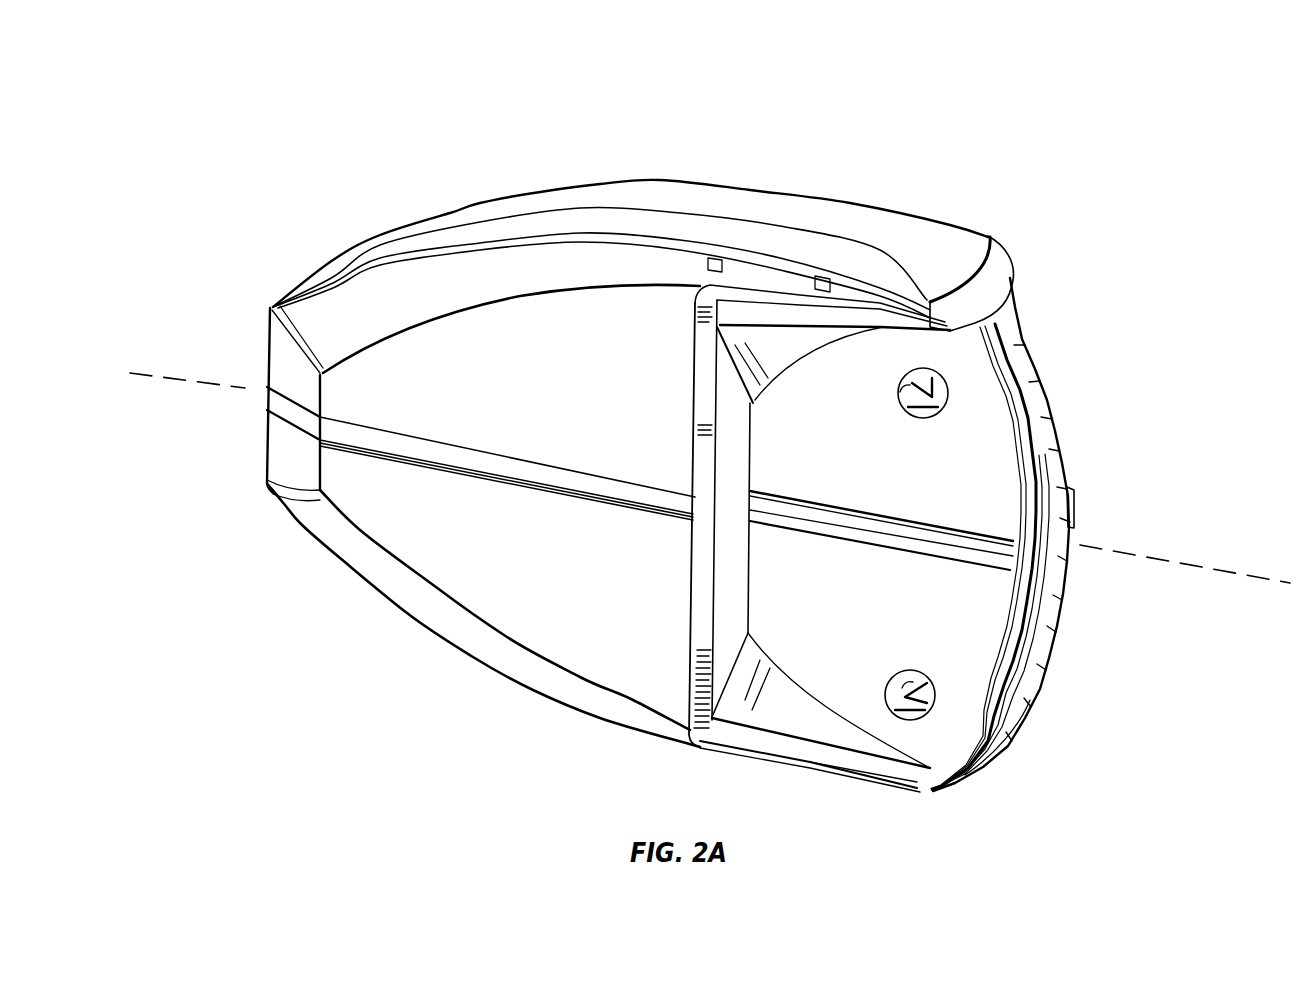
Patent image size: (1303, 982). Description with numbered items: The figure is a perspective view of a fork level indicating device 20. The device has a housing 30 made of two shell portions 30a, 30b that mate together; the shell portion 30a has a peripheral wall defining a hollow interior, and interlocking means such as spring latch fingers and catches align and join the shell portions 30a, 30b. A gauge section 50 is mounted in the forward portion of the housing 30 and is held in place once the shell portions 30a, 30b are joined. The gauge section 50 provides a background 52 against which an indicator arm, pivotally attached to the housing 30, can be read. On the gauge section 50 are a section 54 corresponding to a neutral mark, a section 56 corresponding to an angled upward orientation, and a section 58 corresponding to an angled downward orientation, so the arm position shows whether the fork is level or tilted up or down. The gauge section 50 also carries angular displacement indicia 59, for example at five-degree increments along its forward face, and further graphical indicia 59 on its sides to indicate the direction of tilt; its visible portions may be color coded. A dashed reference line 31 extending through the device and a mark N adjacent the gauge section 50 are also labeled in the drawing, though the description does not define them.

The fork level indicating device 20 is at (383, 100).
The housing 30 is at (534, 180).
The shell portion 30a is at (730, 238).
The shell portion 30b is at (813, 217).
The axis 31 is at (190, 383).
The gauge section 50 is at (1134, 512).
The background 52 is at (1057, 443).
The section corresponding to a neutral mark 54 is at (1065, 535).
The section corresponding to an angled upward orientation 56 is at (1067, 398).
The section corresponding to an angled downward orientation 58 is at (1034, 715).
The angular displacement indicia 59 is at (937, 367).
The cross bar N is at (970, 560).